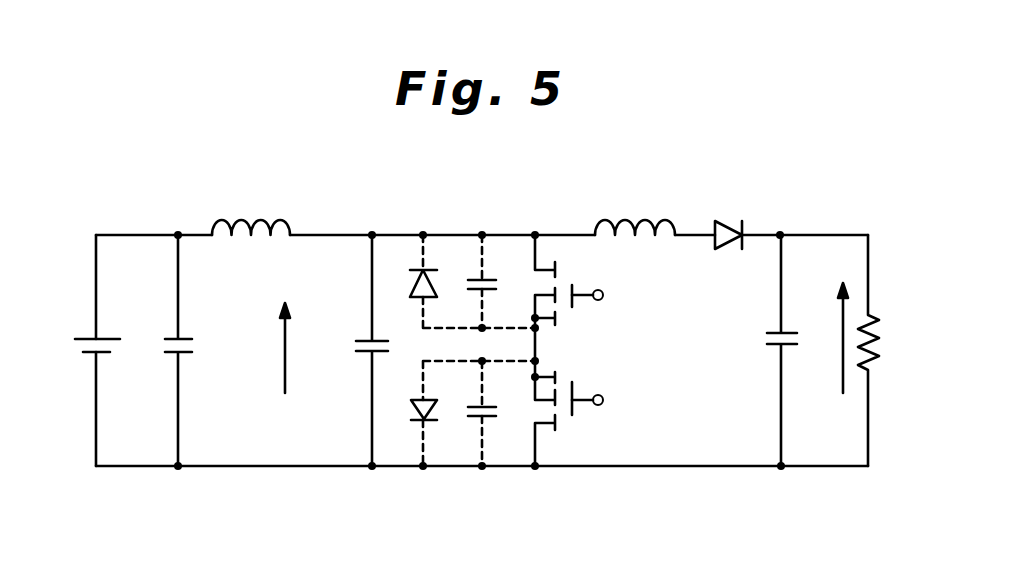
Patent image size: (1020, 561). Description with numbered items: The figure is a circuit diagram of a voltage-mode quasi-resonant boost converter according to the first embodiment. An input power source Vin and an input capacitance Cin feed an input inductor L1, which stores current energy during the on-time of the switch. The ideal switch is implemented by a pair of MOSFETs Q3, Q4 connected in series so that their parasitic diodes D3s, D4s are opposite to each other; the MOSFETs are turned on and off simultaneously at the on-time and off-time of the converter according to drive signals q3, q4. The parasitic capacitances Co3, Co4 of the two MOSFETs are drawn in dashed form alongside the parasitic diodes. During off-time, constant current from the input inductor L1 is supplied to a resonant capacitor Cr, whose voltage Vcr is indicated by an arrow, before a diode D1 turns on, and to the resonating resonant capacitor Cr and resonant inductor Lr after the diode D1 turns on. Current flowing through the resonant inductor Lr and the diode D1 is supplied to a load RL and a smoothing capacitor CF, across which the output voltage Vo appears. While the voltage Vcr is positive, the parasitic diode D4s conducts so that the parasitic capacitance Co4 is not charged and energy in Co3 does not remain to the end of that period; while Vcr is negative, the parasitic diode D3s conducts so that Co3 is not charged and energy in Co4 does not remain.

The input power source Vin is at (107, 346).
The input capacitance Cin is at (193, 342).
The input inductor L1 is at (255, 223).
The resonant capacitor voltage Vcr is at (263, 348).
The resonant capacitor Cr is at (357, 348).
The parasitic diode D3s is at (410, 285).
The parasitic diode D4s is at (412, 409).
The parasitic capacitance Co3 is at (493, 282).
The parasitic capacitance Co4 is at (498, 412).
The MOSFET Q3 is at (573, 280).
The drive signal q3 is at (604, 298).
The MOSFET Q4 is at (578, 418).
The drive signal q4 is at (604, 400).
The resonant inductor Lr is at (637, 220).
The diode D1 is at (730, 221).
The smoothing capacitor CF is at (763, 340).
The output voltage Vo is at (829, 338).
The load RL is at (863, 362).